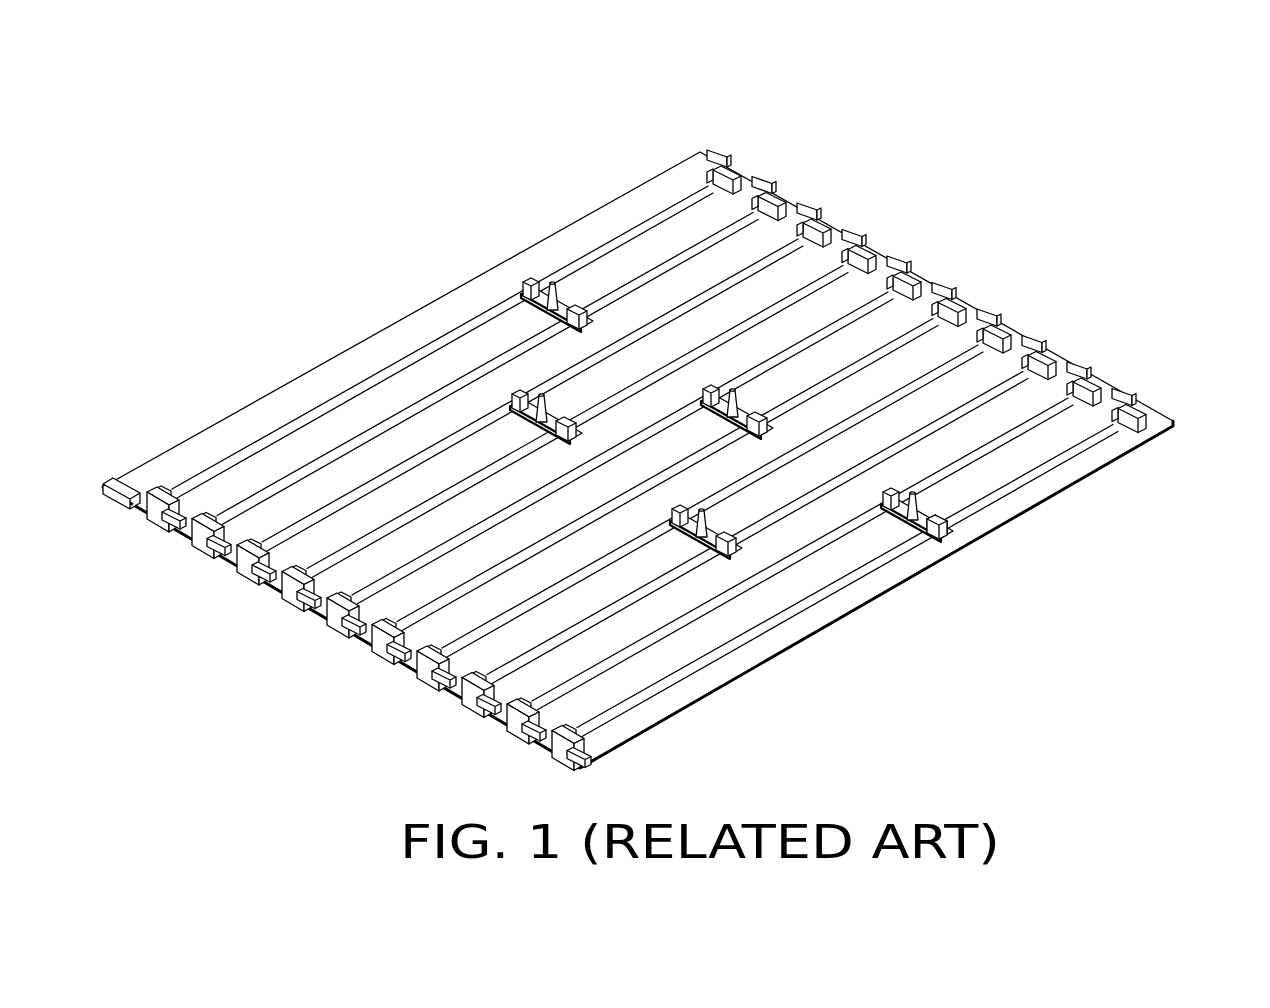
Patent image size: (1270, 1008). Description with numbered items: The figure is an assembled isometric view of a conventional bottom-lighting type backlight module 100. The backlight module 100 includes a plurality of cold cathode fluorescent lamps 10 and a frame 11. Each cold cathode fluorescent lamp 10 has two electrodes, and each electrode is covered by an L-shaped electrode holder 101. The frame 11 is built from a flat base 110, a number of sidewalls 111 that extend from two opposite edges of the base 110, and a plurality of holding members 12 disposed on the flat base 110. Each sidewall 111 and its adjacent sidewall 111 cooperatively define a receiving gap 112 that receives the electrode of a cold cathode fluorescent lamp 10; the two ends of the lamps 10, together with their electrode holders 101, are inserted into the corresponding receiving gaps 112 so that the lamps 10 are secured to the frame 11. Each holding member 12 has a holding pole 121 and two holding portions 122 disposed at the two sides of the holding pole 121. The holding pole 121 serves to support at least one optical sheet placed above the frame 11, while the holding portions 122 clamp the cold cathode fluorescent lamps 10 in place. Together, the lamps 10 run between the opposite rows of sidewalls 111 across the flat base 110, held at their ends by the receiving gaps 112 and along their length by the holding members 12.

The backlight module 100 is at (721, 86).
The cold cathode fluorescent lamp 10 is at (1078, 445).
The electrode holder 101 is at (866, 238).
The frame 11 is at (1152, 252).
The flat base 110 is at (1058, 383).
The sidewall 111 is at (1030, 346).
The receiving gap 112 is at (458, 694).
The holding member 12 is at (1118, 394).
The holding pole 121 is at (897, 522).
The holding portion 122 is at (937, 530).